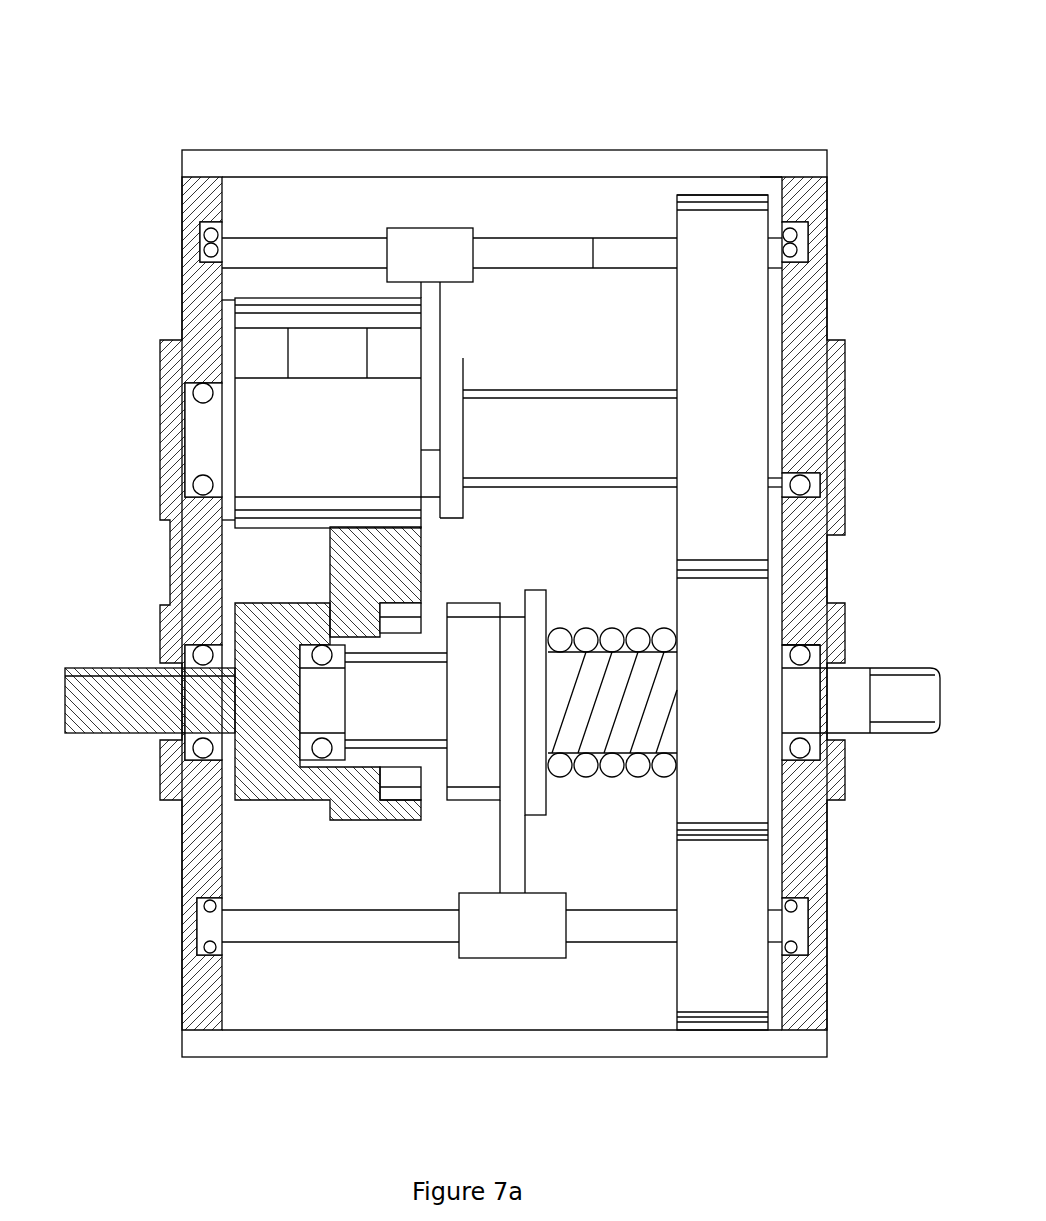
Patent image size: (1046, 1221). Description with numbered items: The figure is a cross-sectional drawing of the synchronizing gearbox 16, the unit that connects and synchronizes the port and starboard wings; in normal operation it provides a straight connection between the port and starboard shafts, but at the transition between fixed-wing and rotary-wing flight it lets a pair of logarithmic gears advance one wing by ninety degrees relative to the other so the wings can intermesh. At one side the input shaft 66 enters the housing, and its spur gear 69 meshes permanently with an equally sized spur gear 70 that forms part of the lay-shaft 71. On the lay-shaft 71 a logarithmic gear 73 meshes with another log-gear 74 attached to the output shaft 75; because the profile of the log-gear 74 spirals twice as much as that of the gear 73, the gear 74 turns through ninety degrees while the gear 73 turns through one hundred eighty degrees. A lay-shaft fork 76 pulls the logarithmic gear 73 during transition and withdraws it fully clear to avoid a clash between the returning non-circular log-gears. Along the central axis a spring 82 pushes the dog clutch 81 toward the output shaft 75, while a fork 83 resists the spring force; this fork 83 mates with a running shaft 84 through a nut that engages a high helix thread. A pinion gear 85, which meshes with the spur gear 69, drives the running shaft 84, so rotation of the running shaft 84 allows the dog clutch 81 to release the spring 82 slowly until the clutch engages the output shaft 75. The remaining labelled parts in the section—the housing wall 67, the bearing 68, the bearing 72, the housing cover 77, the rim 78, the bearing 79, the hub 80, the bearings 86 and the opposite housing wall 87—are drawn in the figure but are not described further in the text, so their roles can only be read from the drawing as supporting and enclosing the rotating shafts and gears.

The synchronizing gearbox 16 is at (578, 66).
The input shaft 66 is at (872, 694).
The housing right wall 67 is at (815, 562).
The bearing 68 is at (815, 750).
The spur gear 69 is at (745, 806).
The spur gear 70 is at (715, 393).
The lay-shaft 71 is at (590, 432).
The bearing 72 is at (830, 382).
The logarithmic gear 73 is at (262, 330).
The log-gear 74 is at (330, 557).
The output shaft 75 is at (140, 703).
The lay-shaft fork 76 is at (437, 245).
The housing cover 77 is at (652, 246).
The disc rim 78 is at (742, 242).
The bearing 79 is at (800, 232).
The hub 80 is at (310, 760).
The dog clutch 81 is at (492, 798).
The spring 82 is at (636, 768).
The fork 83 is at (522, 922).
The running shaft 84 is at (410, 928).
The pinion gear 85 is at (712, 957).
The bearing 86 is at (206, 902).
The housing left wall 87 is at (172, 774).